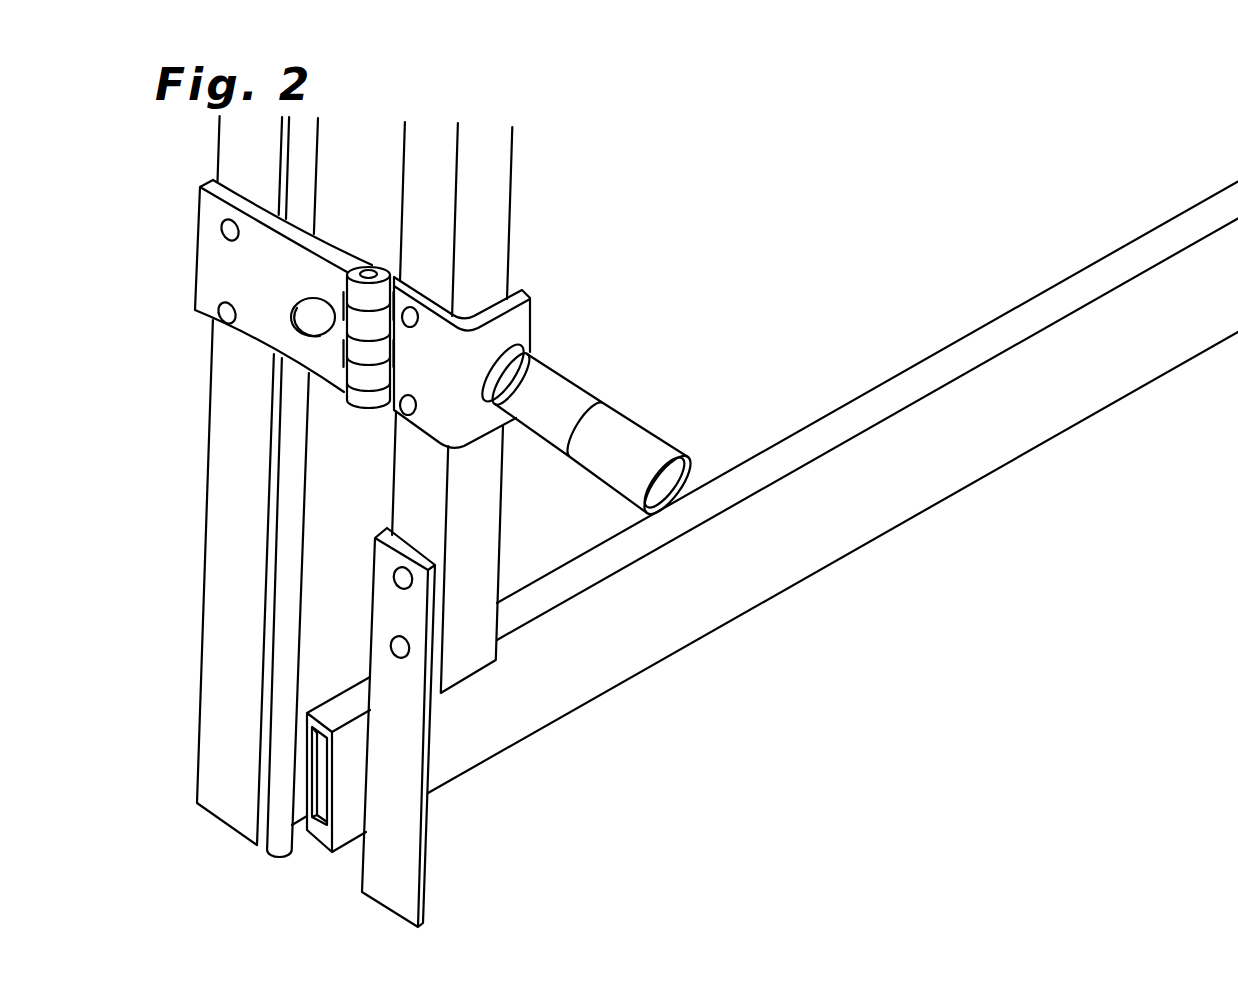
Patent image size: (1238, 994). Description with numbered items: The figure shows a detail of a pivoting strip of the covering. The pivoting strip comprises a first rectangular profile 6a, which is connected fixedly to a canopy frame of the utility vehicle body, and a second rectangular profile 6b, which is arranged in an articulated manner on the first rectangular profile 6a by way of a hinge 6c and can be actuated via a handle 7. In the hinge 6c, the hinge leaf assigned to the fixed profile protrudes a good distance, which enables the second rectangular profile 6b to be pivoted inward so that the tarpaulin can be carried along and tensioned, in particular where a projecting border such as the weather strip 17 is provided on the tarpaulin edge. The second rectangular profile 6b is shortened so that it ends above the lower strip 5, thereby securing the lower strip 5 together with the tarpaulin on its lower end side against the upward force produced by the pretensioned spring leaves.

The lower strip 5 is at (788, 535).
The first rectangular profile 6a is at (232, 546).
The second rectangular profile 6b is at (476, 517).
The hinge 6c is at (371, 242).
The handle 7 is at (641, 443).
The weather strip 17 is at (287, 682).